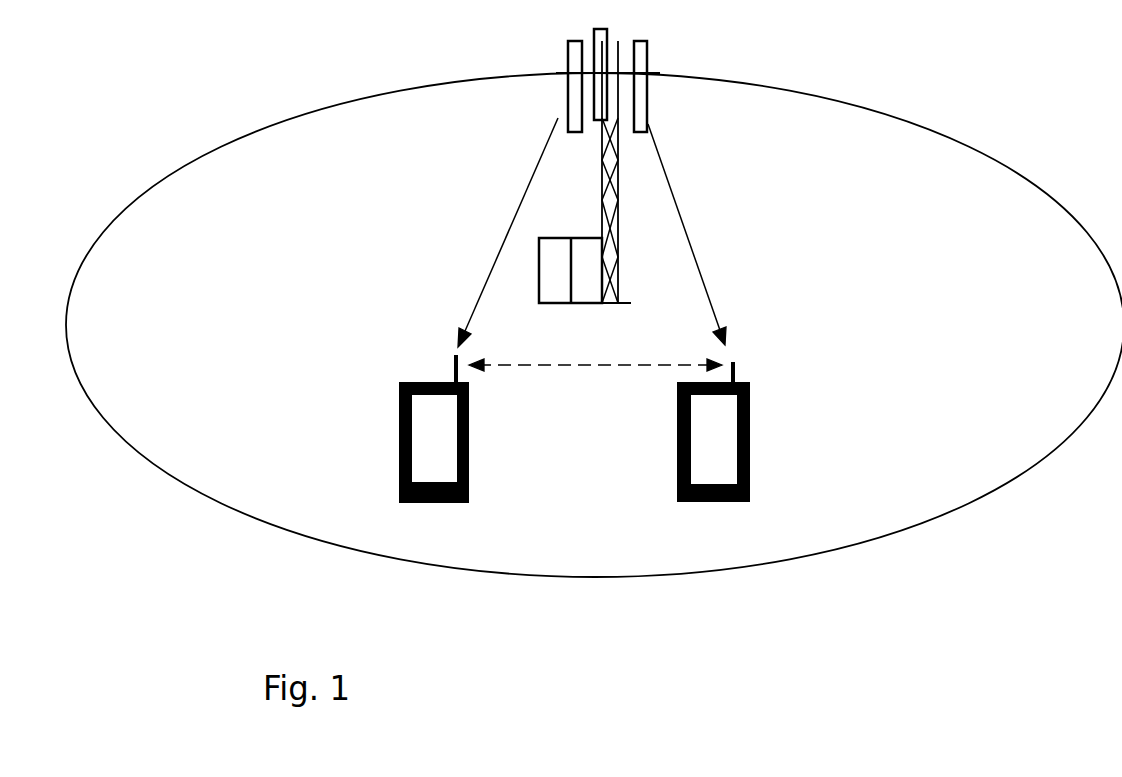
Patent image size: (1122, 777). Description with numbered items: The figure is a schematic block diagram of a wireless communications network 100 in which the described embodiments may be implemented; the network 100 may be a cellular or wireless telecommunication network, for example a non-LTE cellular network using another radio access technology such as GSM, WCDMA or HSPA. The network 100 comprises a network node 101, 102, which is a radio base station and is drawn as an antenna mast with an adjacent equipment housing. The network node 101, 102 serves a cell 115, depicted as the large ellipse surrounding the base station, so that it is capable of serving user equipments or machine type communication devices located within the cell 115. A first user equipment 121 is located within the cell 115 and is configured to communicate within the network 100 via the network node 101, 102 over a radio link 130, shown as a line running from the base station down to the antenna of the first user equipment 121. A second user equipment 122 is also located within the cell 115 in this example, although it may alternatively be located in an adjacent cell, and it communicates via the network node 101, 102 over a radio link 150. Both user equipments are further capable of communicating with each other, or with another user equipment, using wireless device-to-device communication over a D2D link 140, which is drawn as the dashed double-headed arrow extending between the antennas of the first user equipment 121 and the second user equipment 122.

The wireless communications network 100 is at (933, 613).
The network node 101 is at (682, 166).
The network node 102 is at (608, 80).
The cell 115 is at (197, 493).
The first user equipment 121 is at (398, 401).
The second user equipment 122 is at (677, 495).
The radio link 130 is at (469, 313).
The D2D link 140 is at (541, 366).
The radio link 150 is at (705, 283).